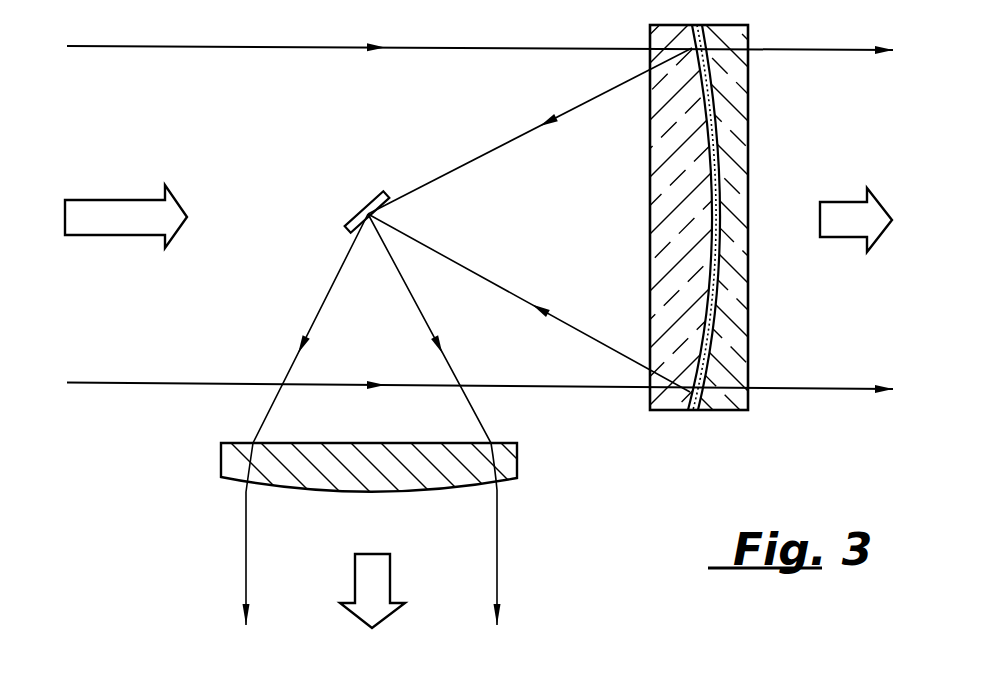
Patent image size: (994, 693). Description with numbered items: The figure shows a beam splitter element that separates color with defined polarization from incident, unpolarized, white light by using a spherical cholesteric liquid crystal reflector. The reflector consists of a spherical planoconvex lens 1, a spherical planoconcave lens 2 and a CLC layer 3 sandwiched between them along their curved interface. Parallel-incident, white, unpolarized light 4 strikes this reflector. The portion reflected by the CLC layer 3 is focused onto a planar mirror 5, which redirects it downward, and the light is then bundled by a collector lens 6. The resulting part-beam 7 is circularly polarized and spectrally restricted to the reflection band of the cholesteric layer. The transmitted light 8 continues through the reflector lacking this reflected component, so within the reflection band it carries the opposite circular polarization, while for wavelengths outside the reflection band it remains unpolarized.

The planoconvex lens 1 is at (662, 159).
The planoconcave lens 2 is at (735, 107).
The CLC layer 3 is at (747, 155).
The parallel-incident, white, unpolarized light 4 is at (126, 206).
The planar mirror 5 is at (370, 206).
The collector lens 6 is at (512, 462).
The circular-polarized light in the spectral region of the cholesteric reflection ba 7 is at (376, 591).
The transmitted light without the component reflected by the CLC layer 8 is at (856, 209).